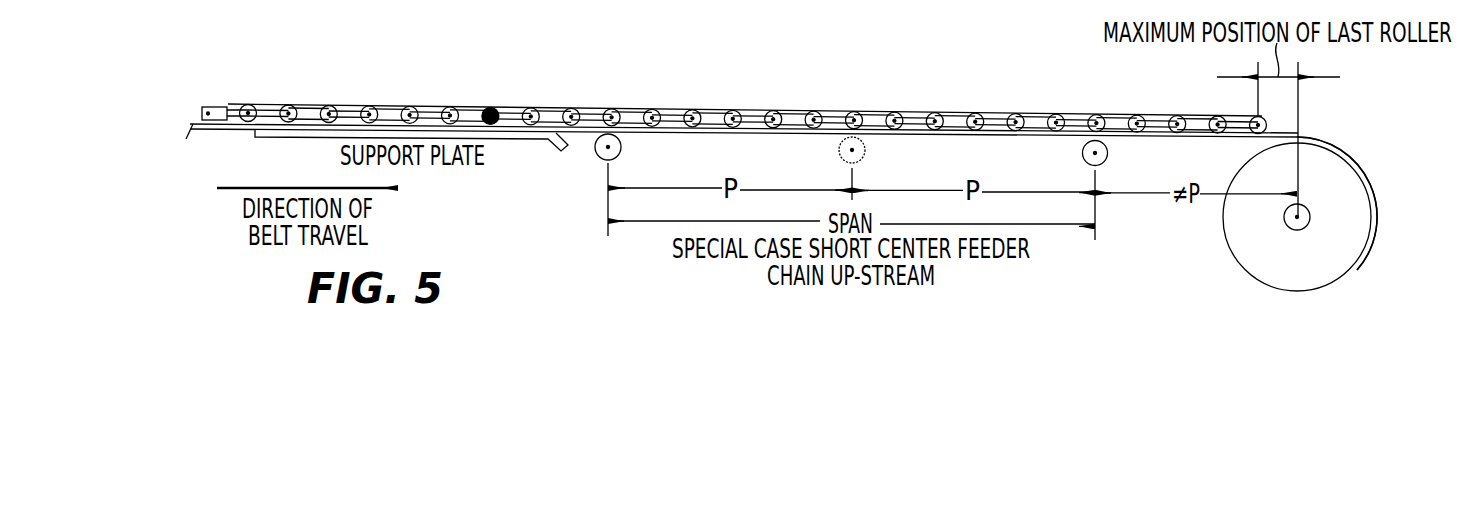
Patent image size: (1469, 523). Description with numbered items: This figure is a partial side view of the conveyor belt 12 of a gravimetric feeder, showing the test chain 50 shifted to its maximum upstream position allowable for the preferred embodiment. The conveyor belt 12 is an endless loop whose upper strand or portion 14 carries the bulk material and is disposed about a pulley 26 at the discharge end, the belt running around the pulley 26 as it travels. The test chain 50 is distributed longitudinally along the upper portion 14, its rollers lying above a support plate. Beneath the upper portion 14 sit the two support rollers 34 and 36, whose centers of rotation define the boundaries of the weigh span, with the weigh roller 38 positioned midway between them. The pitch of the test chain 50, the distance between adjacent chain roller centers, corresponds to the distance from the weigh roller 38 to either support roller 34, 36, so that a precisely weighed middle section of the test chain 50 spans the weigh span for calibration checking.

The conveyor belt 12 is at (225, 123).
The test chain 50 is at (312, 106).
The support roller 34 is at (622, 149).
The weigh roller 38 is at (866, 152).
The support roller 36 is at (1108, 155).
The upper strand or portion 14 is at (1352, 157).
The pulley 26 is at (1340, 222).